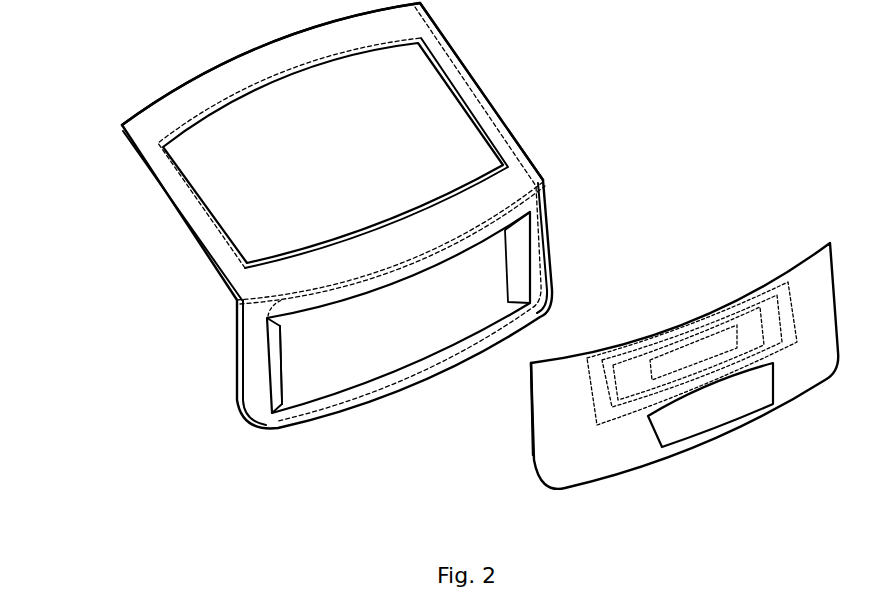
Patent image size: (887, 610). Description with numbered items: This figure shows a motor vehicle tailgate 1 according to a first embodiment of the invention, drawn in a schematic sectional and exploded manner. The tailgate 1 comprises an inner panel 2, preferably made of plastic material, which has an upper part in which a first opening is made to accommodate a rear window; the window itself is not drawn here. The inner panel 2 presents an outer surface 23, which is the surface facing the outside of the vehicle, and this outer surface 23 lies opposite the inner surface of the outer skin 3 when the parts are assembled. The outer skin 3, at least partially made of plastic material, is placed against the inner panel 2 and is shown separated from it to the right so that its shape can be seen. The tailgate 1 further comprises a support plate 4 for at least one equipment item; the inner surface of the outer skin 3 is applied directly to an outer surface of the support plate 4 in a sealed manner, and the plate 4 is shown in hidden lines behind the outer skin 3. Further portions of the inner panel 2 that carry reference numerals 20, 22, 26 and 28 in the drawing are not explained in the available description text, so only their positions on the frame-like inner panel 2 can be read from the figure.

The tailgate 1 is at (84, 49).
The inner panel 2 is at (206, 268).
The outer skin 3 is at (531, 455).
The support plate 4 is at (597, 347).
The lower frame portion 20 is at (228, 380).
The panel side edge 22 is at (518, 388).
The outer surface of the inner panel 23 is at (436, 100).
The upper frame portion 26 is at (158, 226).
The seal 28 is at (553, 217).